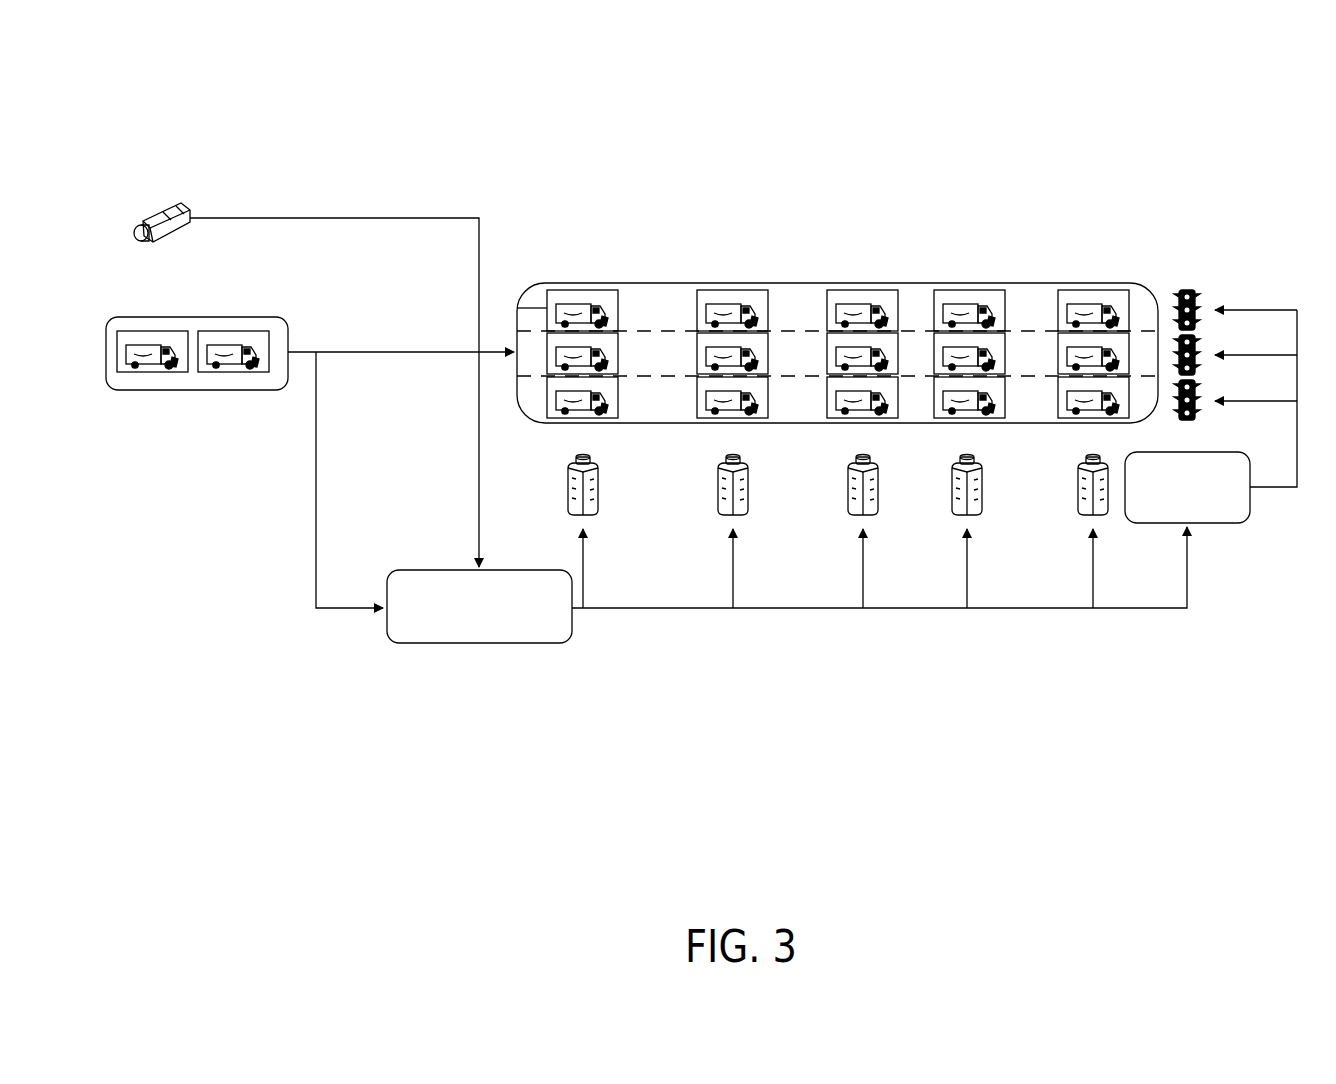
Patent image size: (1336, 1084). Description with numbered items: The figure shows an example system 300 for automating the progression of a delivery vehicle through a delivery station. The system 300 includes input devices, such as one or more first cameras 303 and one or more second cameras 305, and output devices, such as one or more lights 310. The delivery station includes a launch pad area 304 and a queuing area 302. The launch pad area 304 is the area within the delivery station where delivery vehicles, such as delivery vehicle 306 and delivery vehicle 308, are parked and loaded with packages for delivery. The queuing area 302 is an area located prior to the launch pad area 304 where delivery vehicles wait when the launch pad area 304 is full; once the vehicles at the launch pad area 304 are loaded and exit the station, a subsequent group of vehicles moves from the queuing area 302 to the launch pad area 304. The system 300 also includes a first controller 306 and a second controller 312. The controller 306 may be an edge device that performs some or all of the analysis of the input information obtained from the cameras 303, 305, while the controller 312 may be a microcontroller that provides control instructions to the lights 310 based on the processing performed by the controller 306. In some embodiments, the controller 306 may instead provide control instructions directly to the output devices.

The system 300 is at (203, 72).
The queuing area 302 is at (168, 317).
The first cameras 303 is at (163, 196).
The launch pad area 304 is at (584, 283).
The second cameras 305 is at (823, 632).
The first controller 306 is at (962, 277).
The delivery vehicle 308 is at (1087, 277).
The lights 310 is at (1188, 258).
The second controller 312 is at (1190, 452).